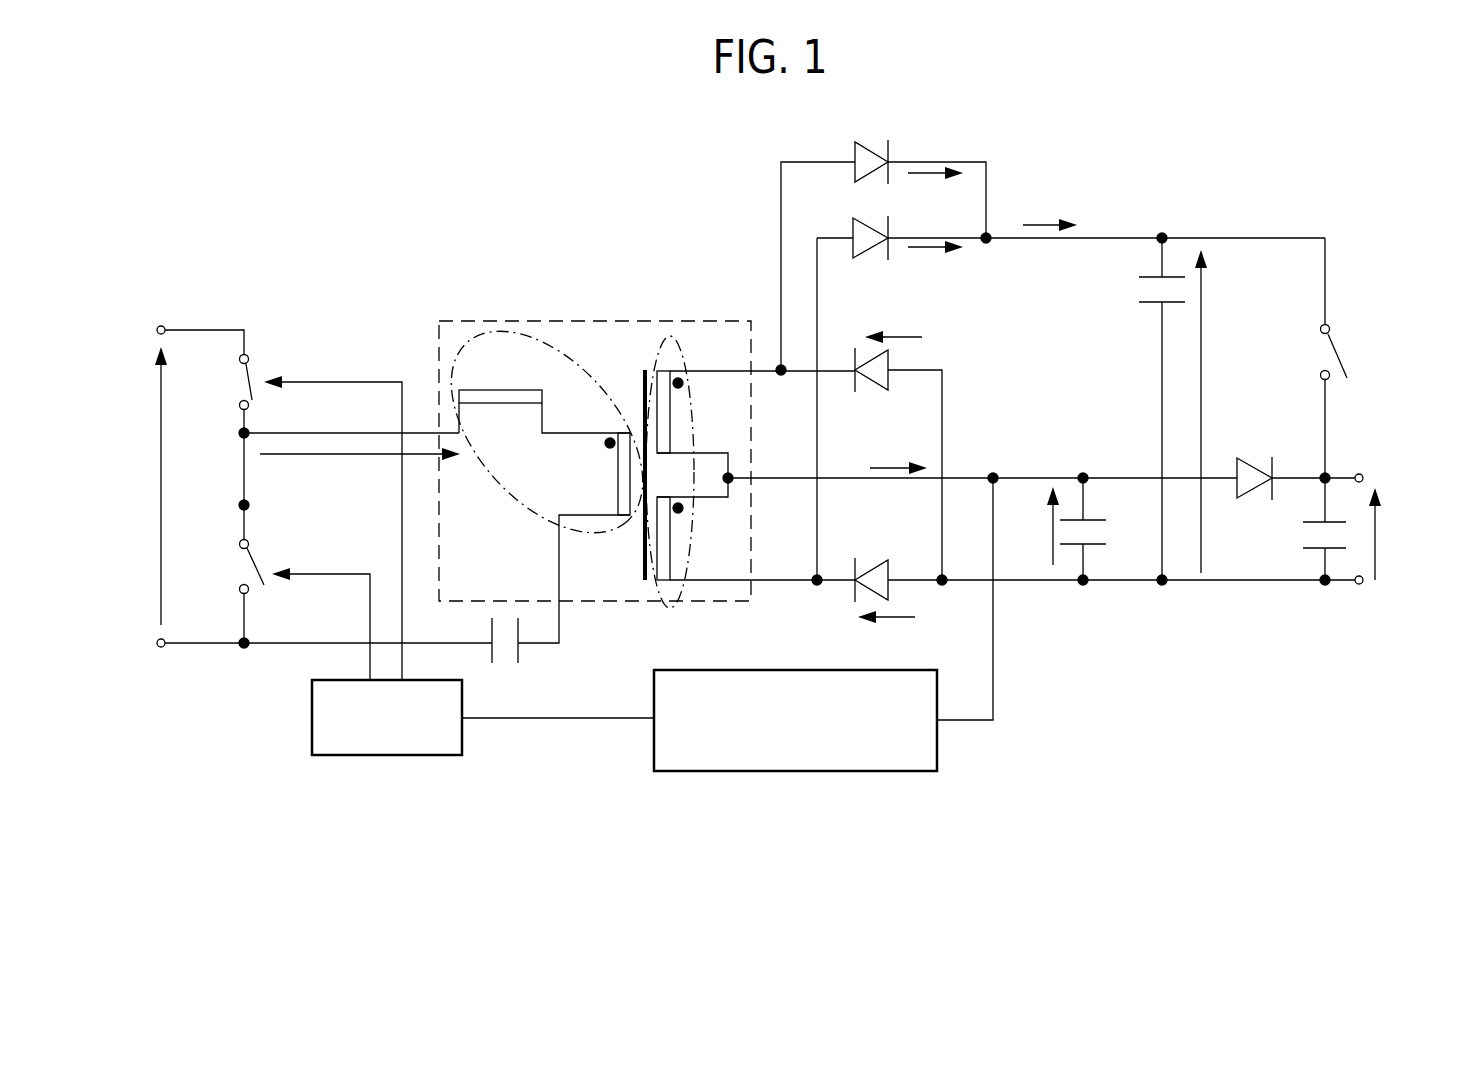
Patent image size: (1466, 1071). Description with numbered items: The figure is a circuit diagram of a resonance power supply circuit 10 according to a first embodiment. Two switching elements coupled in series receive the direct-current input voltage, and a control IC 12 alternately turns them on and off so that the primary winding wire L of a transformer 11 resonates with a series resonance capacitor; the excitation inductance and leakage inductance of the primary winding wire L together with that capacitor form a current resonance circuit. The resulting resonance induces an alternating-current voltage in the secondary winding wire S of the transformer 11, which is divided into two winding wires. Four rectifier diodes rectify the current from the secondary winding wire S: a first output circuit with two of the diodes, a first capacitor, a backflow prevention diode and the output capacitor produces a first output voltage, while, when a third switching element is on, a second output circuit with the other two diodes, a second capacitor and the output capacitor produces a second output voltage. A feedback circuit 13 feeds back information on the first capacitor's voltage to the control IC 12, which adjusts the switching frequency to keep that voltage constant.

The resonance power supply circuit 10 is at (602, 148).
The transformer 11 is at (563, 322).
The control IC 12 is at (389, 756).
The feedback circuit 13 is at (818, 771).
The primary winding wire L is at (500, 335).
The secondary winding wire S is at (672, 337).